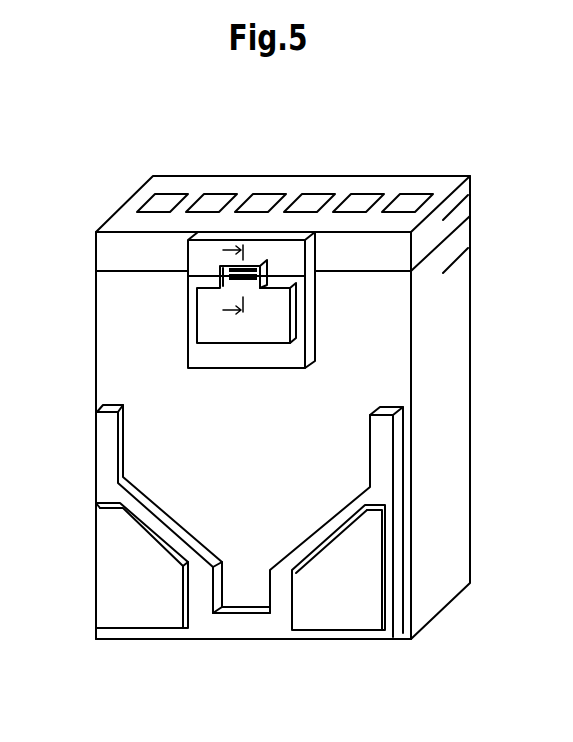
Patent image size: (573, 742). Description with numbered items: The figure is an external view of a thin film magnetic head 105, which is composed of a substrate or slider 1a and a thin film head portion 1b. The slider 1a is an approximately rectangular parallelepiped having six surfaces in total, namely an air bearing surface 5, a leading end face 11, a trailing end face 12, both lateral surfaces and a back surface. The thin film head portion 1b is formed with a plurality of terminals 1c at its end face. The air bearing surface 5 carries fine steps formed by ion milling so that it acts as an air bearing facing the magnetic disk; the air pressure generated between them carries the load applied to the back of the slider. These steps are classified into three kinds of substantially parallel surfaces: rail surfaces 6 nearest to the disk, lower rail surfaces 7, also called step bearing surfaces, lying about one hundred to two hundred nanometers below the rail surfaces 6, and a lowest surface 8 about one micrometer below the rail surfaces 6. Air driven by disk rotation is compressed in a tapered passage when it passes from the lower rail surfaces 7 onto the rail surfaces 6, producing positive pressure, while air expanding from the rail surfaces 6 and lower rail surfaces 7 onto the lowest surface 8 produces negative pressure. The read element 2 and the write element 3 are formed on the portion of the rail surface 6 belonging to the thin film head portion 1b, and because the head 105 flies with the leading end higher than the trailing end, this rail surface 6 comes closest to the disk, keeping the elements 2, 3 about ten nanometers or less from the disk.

The thin film magnetic head 105 is at (460, 134).
The substrate (slider) 1a is at (468, 257).
The thin film head portion 1b is at (471, 194).
The terminals 1c is at (261, 200).
The trailing end face 12 is at (145, 190).
The write element 3 is at (228, 270).
The read element 2 is at (250, 268).
The air bearing surface 5 is at (128, 130).
The lowest surface 8 is at (117, 378).
The lower rail surfaces (step bearing surfaces) 7 is at (202, 353).
The rail surfaces 6 is at (207, 323).
The leading end face 11 is at (213, 642).